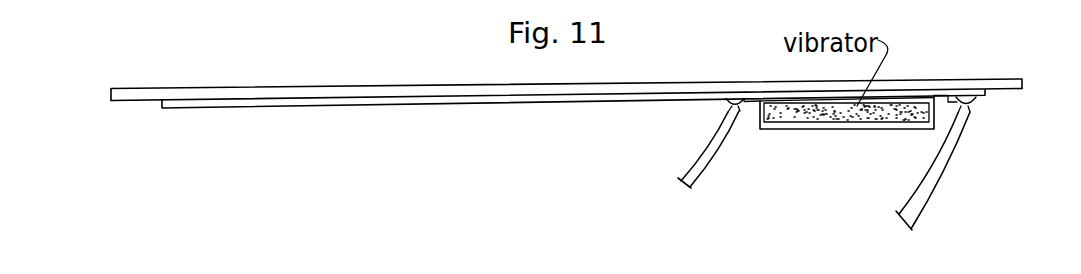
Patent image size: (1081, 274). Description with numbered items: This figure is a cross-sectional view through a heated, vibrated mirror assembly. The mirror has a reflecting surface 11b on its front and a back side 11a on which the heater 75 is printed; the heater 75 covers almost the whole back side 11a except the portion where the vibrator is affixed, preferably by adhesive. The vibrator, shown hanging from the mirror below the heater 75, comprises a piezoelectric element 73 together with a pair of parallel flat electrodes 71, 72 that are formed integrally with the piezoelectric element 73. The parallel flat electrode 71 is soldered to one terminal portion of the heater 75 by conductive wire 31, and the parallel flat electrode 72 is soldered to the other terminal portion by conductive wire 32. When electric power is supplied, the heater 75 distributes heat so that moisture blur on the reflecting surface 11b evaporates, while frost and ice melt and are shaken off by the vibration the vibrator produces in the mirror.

The back side of the mirror 11a is at (145, 101).
The reflecting surface of the mirror 11b is at (145, 88).
The heater 75 is at (342, 108).
The conductive wire 31 is at (705, 148).
The conductive wire 32 is at (948, 165).
The parallel flat electrode 71 is at (882, 128).
The parallel flat electrode 72 is at (787, 98).
The piezoelectric element 73 is at (825, 108).